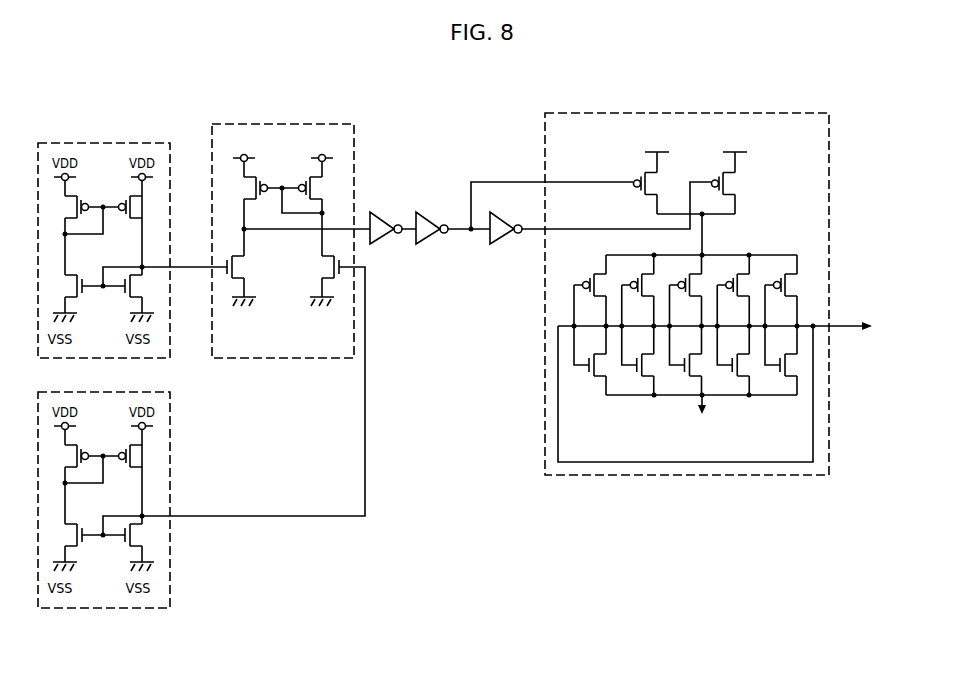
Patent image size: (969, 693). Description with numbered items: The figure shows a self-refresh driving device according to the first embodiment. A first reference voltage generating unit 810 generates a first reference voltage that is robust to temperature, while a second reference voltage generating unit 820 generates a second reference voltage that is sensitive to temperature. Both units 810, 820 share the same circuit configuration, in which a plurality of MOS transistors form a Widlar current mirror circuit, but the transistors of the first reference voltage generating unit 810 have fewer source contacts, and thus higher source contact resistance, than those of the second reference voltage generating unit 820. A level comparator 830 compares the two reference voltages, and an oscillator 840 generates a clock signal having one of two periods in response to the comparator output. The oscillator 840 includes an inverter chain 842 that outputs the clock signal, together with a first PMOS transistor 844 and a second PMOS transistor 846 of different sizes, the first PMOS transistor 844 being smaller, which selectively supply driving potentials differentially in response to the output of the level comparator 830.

The first reference voltage generating unit 810 is at (128, 143).
The second reference voltage generating unit 820 is at (128, 392).
The level comparator 830 is at (315, 124).
The oscillator 840 is at (788, 113).
The inverter chain 842 is at (597, 400).
The first PMOS transistor 844 is at (659, 184).
The second PMOS transistor 846 is at (736, 184).